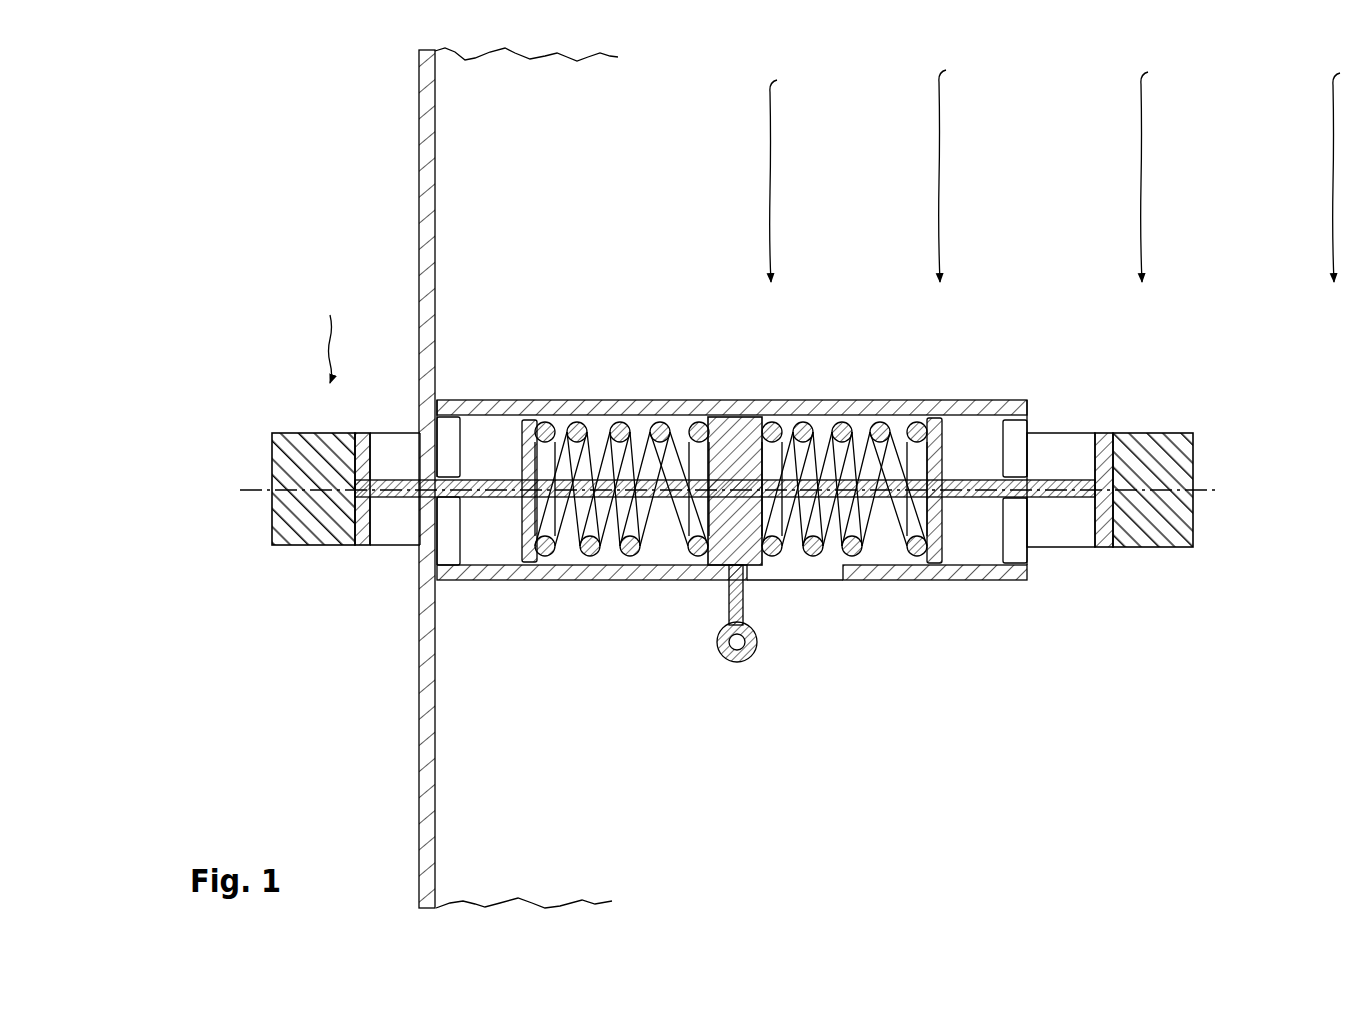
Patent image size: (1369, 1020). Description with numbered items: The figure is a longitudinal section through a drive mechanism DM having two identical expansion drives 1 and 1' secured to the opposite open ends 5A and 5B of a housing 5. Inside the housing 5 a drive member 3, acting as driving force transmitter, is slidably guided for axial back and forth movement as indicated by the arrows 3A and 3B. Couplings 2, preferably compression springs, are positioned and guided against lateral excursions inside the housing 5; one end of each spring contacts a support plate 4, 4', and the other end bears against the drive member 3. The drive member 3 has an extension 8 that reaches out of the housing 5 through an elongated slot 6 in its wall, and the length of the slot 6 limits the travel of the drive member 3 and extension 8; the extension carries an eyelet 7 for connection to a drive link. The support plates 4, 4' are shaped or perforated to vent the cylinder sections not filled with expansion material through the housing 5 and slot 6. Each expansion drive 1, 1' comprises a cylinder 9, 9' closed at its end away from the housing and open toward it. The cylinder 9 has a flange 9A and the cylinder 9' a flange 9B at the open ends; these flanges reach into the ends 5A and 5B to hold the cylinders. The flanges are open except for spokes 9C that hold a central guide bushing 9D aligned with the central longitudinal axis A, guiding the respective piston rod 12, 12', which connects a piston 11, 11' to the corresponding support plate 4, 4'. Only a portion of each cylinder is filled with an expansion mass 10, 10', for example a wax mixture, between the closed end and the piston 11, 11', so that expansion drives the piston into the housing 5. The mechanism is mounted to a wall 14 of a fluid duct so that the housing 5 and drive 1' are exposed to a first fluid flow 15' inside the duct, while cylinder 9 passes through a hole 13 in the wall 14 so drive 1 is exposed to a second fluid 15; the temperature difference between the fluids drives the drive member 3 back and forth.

The expansion drive 1 is at (221, 657).
The expansion drive 1' is at (1153, 650).
The coupling spring 2 is at (586, 552).
The drive member 3 is at (736, 416).
The arrow 3A is at (712, 642).
The arrow 3B is at (805, 642).
The support plate 4 is at (531, 394).
The support plate 4' is at (951, 459).
The housing 5 is at (732, 408).
The housing end 5A is at (461, 400).
The housing end 5B is at (1003, 400).
The elongated slot 6 is at (657, 578).
The eyelet 7 is at (735, 662).
The extension 8 is at (745, 606).
The cylinder 9 is at (283, 315).
The cylinder 9' is at (1185, 403).
The flange 9A is at (453, 556).
The flange 9B is at (1013, 577).
The spokes 9C is at (462, 452).
The central guide bushing 9D is at (434, 471).
The expansion mass 10 is at (235, 398).
The expansion mass 10' is at (1196, 496).
The piston 11 is at (320, 605).
The piston 11' is at (1114, 526).
The piston rod 12 is at (386, 583).
The piston rod 12' is at (1061, 515).
The hole 13 is at (357, 331).
The wall 14 is at (418, 175).
The second fluid 15 is at (307, 347).
The first fluid flow 15' is at (1055, 176).
The central longitudinal axis A is at (1208, 490).
The drive mechanism DM is at (630, 268).